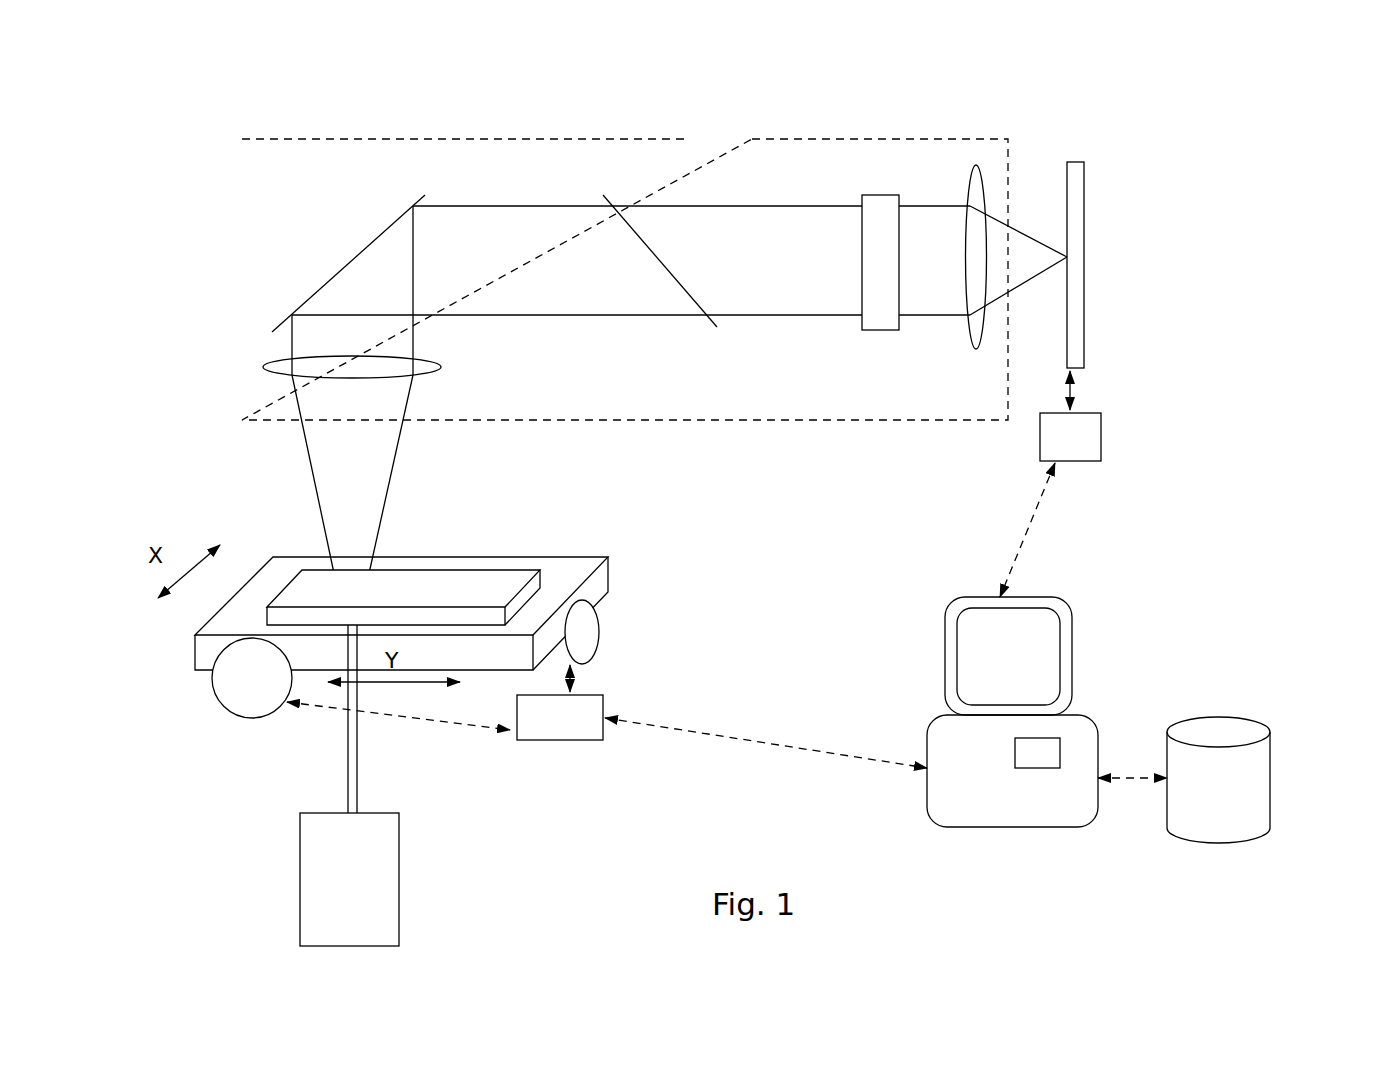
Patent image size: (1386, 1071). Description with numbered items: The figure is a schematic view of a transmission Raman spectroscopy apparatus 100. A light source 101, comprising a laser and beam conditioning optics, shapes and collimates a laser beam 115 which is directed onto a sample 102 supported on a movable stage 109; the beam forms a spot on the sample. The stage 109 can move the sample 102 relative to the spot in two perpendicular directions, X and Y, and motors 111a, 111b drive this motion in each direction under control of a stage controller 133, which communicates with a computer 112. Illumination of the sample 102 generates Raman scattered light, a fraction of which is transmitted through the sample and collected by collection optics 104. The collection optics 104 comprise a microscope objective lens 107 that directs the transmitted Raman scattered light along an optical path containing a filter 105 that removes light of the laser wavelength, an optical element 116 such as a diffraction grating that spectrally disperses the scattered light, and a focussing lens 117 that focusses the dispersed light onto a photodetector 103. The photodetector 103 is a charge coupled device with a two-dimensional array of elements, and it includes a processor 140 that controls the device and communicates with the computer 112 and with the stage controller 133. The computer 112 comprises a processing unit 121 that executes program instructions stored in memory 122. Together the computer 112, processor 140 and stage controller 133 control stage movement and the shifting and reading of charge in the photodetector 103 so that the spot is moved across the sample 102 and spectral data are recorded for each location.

The transmission Raman spectroscopy apparatus 100 is at (793, 110).
The light source 101 is at (400, 882).
The sample 102 is at (420, 575).
The photodetector 103 is at (1086, 171).
The collection optics 104 is at (790, 421).
The filter 105 is at (617, 202).
The microscope objective lens 107 is at (263, 367).
The movable stage 109 is at (305, 565).
The motor 111a is at (255, 705).
The motor 111b is at (577, 605).
The computer 112 is at (1100, 735).
The laser beam 115 is at (353, 753).
The optical element 116 is at (868, 192).
The focussing lens 117 is at (973, 163).
The processing unit 121 is at (1037, 750).
The memory 122 is at (1258, 797).
The stage controller 133 is at (582, 740).
The processor 140 is at (1031, 428).